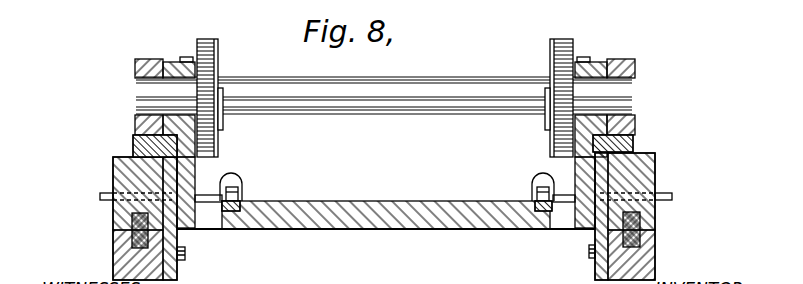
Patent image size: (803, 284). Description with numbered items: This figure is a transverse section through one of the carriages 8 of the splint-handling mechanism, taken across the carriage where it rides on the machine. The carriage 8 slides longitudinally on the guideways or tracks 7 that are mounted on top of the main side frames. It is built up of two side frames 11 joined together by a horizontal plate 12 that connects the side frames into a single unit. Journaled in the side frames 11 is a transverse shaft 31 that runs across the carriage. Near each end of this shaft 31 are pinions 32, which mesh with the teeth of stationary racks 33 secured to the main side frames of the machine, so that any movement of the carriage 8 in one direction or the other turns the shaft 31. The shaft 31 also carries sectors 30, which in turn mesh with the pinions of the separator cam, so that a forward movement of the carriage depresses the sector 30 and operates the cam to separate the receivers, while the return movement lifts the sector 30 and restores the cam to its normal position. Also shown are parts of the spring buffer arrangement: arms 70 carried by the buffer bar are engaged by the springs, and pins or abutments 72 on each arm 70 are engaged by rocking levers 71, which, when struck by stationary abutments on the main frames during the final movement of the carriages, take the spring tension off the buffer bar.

The longitudinal guideway or track 7 is at (133, 237).
The carriage 8 is at (674, 89).
The side frame 11 is at (148, 174).
The horizontal plate 12 is at (371, 208).
The sector 30 is at (211, 62).
The transverse shaft 31 is at (413, 89).
The pinion 32 is at (136, 74).
The stationary rack 33 is at (134, 143).
The arm 70 is at (232, 211).
The rocking lever 71 is at (100, 197).
The pin or abutment 72 is at (243, 188).